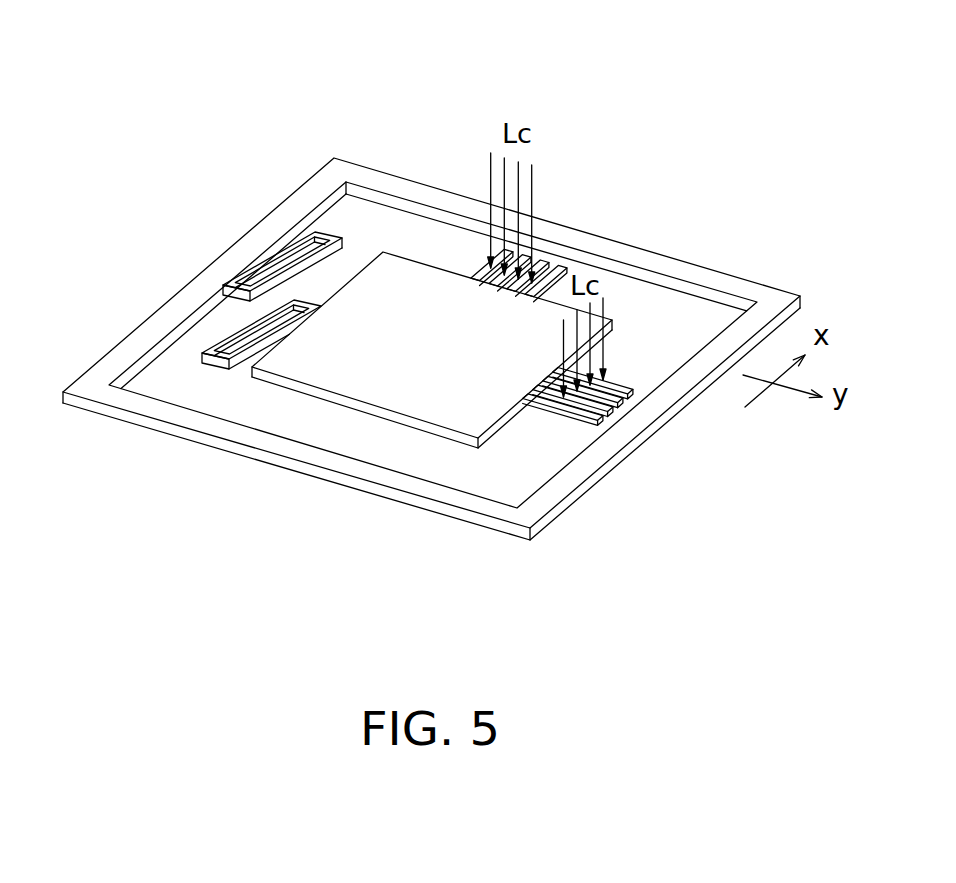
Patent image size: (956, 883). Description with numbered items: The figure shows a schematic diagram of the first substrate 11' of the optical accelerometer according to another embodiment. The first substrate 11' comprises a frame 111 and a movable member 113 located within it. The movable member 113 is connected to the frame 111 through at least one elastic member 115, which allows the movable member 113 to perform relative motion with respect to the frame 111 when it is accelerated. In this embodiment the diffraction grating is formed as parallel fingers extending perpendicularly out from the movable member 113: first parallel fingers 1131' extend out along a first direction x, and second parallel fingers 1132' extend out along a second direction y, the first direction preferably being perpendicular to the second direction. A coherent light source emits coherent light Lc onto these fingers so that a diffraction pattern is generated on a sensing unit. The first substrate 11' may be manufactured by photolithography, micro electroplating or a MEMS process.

The first substrate 11' is at (431, 314).
The frame 111 is at (347, 463).
The movable member 113 is at (317, 365).
The elastic member 115 is at (292, 278).
The first parallel fingers 1131' is at (614, 240).
The second parallel fingers 1132' is at (637, 461).